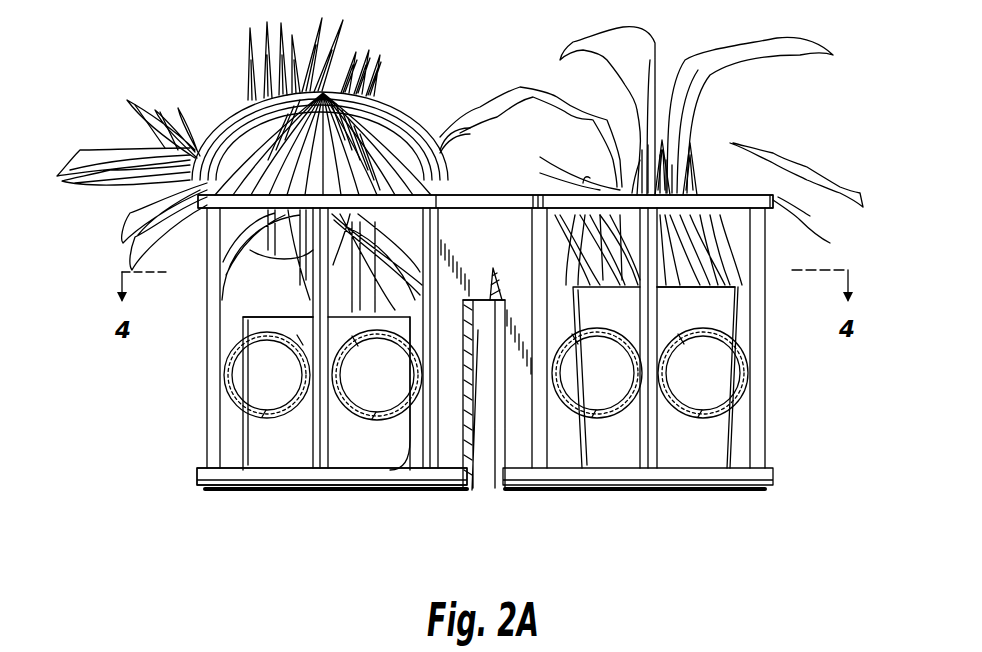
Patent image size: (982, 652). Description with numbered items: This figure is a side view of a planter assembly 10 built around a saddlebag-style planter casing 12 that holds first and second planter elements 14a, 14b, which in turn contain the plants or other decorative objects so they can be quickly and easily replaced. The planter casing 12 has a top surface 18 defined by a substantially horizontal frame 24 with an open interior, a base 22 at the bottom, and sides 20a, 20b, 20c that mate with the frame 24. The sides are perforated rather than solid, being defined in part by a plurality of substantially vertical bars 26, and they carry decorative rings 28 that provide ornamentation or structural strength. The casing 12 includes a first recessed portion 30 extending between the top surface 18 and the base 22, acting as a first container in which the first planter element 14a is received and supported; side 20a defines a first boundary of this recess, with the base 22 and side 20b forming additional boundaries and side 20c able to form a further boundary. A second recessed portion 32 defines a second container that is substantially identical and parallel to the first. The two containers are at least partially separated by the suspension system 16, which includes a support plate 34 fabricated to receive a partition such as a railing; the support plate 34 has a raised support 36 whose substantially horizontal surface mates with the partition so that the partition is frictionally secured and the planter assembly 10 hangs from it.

The planter assembly 10 is at (223, 53).
The planter casing 12 is at (207, 117).
The first planter element 14a is at (240, 443).
The second planter element 14b is at (713, 437).
The suspension system 16 is at (493, 300).
The top surface 18 is at (773, 163).
The side 20a is at (207, 330).
The side 20b is at (373, 503).
The side 20c is at (768, 327).
The base 22 is at (223, 490).
The frame 24 is at (773, 203).
The bars 26 is at (213, 422).
The rings 28 is at (273, 420).
The first recessed portion 30 is at (273, 247).
The second recessed portion 32 is at (700, 235).
The support plate 34 is at (500, 233).
The raised support 36 is at (470, 492).